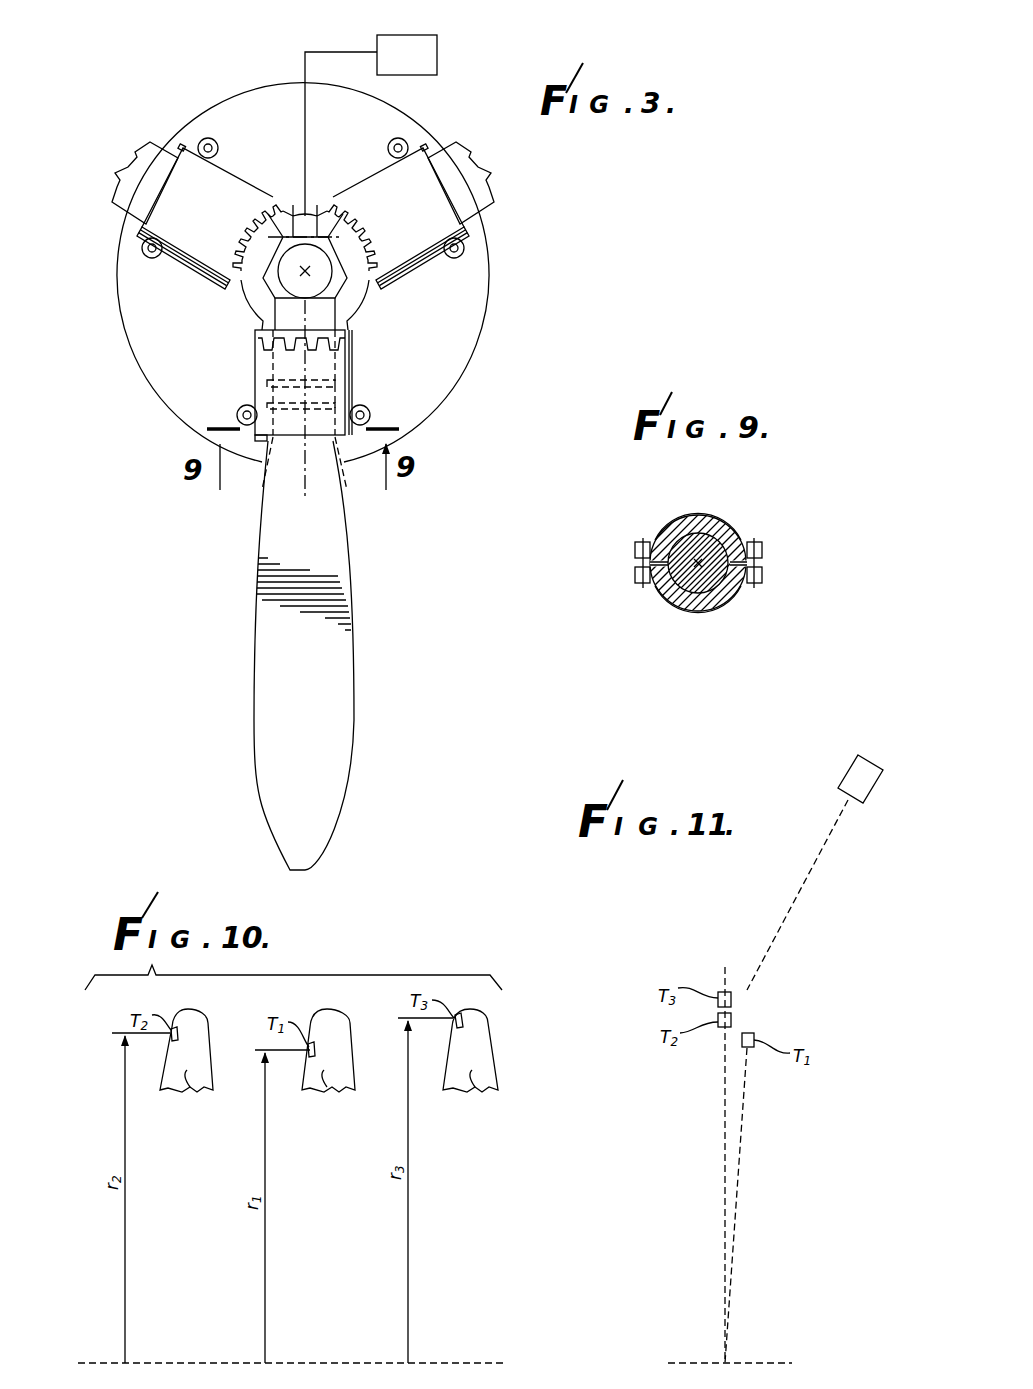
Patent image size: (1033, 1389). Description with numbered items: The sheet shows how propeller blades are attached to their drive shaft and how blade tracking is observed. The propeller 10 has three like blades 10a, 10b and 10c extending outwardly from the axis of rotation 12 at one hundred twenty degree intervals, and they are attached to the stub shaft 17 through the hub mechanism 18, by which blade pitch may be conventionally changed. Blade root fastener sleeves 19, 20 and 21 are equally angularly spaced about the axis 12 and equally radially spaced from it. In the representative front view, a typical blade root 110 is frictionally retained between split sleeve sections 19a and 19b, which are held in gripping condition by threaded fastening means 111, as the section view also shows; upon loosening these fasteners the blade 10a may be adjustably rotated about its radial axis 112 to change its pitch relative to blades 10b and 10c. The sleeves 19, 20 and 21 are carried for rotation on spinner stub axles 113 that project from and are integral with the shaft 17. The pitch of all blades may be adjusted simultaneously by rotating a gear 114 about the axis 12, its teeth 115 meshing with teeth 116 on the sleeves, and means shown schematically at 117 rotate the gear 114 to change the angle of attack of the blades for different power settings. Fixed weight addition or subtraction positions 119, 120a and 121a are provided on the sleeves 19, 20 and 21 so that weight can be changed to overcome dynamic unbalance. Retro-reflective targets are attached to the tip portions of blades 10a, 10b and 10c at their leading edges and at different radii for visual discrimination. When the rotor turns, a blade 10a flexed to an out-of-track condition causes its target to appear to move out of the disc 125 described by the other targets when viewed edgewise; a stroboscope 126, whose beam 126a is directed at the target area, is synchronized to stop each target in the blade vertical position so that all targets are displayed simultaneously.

In FIG. 3, the propeller 10 is at (148, 555).
In FIG. 3, the blade 10a is at (253, 715).
In FIG. 10, the blade 10a is at (327, 1089).
In FIG. 3, the blade 10b is at (106, 197).
In FIG. 10, the blade 10b is at (187, 1091).
In FIG. 3, the blade 10c is at (502, 192).
In FIG. 10, the blade 10c is at (477, 1089).
In FIG. 3, the axis of rotation 12 is at (303, 268).
In FIG. 3, the stub shaft 17 is at (312, 250).
In FIG. 3, the hub mechanism 18 is at (386, 369).
In FIG. 3, the blade root fastener sleeve 19 is at (245, 384).
In FIG. 9, the blade root fastener sleeve 19 is at (666, 516).
In FIG. 9, the split sleeve section 19a is at (717, 517).
In FIG. 9, the split sleeve section 19b is at (723, 603).
In FIG. 3, the blade root fastener sleeve 20 is at (180, 218).
In FIG. 3, the blade root fastener sleeve 21 is at (411, 180).
In FIG. 3, the blade root 110 is at (348, 480).
In FIG. 9, the blade root 110 is at (721, 533).
In FIG. 3, the threaded fastening means 111 is at (244, 406).
In FIG. 9, the threaded fastening means 111 is at (631, 571).
In FIG. 3, the radial axis 112 is at (305, 498).
In FIG. 9, the radial axis 112 is at (695, 570).
In FIG. 10, the radial axis 112 is at (157, 1364).
In FIG. 11, the radial axis 112 is at (755, 1364).
In FIG. 3, the spinner stub axle 113 is at (289, 355).
In FIG. 3, the gear 114 is at (249, 300).
In FIG. 3, the gear teeth 115 is at (308, 327).
In FIG. 3, the sleeve teeth 116 is at (312, 352).
In FIG. 3, the gear rotating means 117 is at (437, 72).
In FIG. 3, the weight addition or subtraction position 119 is at (262, 447).
In FIG. 3, the weight addition or subtraction position 120a is at (183, 148).
In FIG. 3, the weight addition or subtraction position 121a is at (487, 220).
In FIG. 11, the disc 125 is at (725, 1112).
In FIG. 11, the stroboscope 126 is at (853, 772).
In FIG. 11, the beam 126a is at (793, 908).